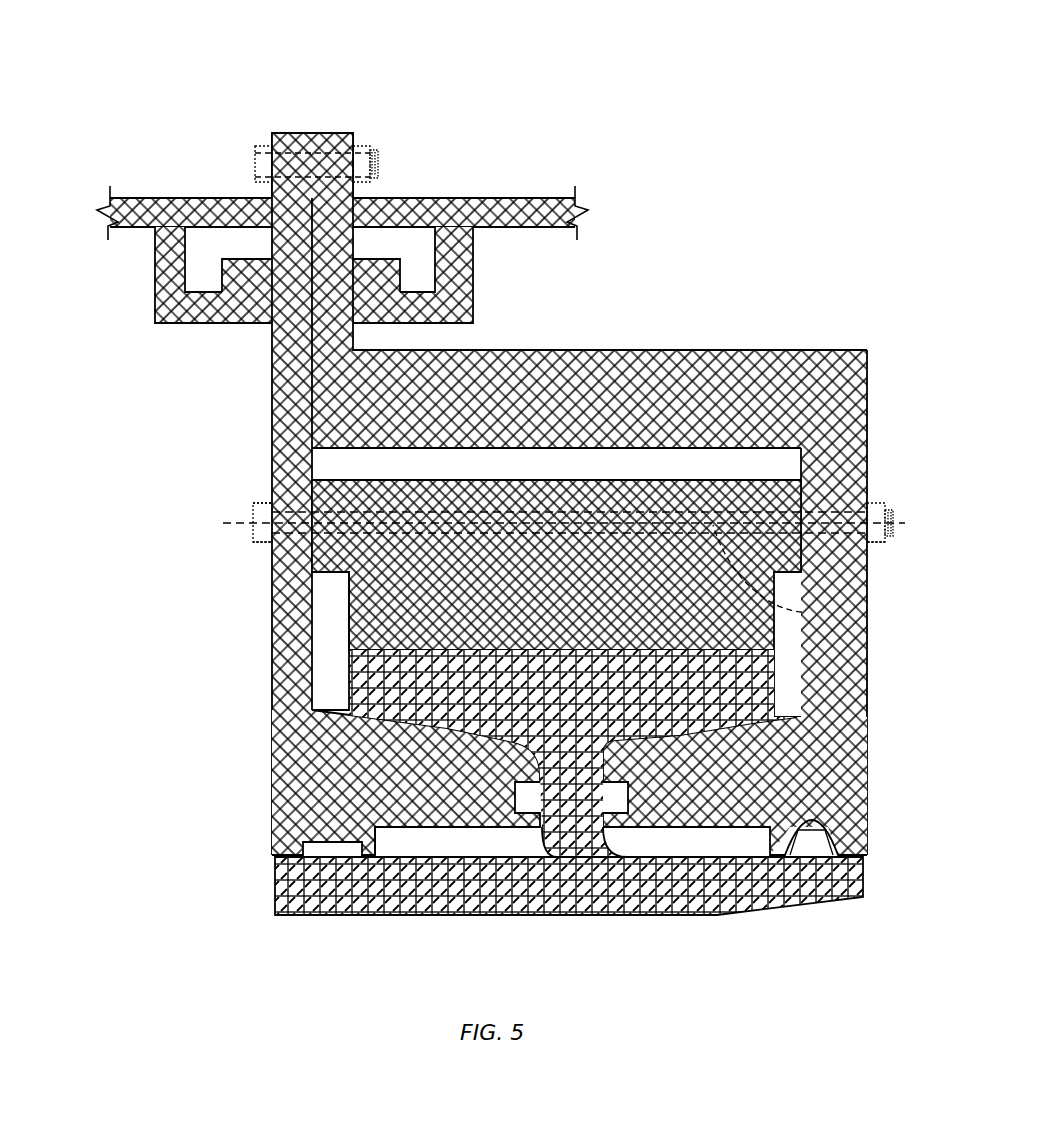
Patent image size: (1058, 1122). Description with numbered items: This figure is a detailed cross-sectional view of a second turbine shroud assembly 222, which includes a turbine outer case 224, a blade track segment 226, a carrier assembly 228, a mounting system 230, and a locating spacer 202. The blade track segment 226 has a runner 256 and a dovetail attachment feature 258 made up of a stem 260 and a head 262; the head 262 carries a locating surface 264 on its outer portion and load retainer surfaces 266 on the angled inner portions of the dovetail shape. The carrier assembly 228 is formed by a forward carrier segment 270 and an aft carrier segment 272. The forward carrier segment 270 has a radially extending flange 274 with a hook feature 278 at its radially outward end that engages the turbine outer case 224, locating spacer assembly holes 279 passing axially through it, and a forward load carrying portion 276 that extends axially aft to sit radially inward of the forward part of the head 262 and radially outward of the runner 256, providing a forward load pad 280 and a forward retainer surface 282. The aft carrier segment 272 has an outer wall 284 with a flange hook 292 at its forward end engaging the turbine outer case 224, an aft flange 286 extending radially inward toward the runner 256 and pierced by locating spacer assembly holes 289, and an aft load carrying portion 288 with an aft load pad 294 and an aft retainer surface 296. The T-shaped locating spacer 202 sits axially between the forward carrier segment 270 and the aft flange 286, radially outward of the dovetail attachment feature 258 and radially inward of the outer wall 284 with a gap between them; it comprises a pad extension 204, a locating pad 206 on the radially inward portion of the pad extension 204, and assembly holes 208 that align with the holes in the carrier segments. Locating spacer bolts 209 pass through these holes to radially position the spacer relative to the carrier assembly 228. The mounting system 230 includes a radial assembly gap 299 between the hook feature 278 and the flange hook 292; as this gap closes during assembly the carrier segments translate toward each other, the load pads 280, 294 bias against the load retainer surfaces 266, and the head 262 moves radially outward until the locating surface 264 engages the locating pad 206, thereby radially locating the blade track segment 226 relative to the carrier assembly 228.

The locating spacer 202 is at (750, 507).
The pad extension 204 is at (722, 617).
The locating pad 206 is at (747, 650).
The assembly holes 208 is at (802, 612).
The locating spacer bolts 209 is at (880, 545).
The turbine shroud assembly 222 is at (708, 123).
The turbine outer case 224 is at (224, 152).
The blade track segment 226 is at (730, 922).
The carrier assembly 228 is at (664, 300).
The mounting system 230 is at (100, 190).
The runner 256 is at (770, 890).
The dovetail attachment feature 258 is at (582, 835).
The stem 260 is at (545, 832).
The head 262 is at (710, 690).
The locating surface 264 is at (703, 690).
The load retainer surfaces 266 is at (705, 733).
The forward carrier segment 270 is at (218, 613).
The aft carrier segment 272 is at (804, 300).
The radially extending flange 274 is at (272, 468).
The forward load carrying portion 276 is at (350, 770).
The hook feature 278 is at (247, 283).
The locating spacer assembly holes 279 is at (268, 527).
The forward load pad 280 is at (447, 730).
The forward retainer surface 282 is at (327, 710).
The outer wall 284 is at (471, 365).
The aft flange 286 is at (837, 437).
The aft load carrying portion 288 is at (770, 762).
The locating spacer assembly holes 289 is at (877, 497).
The flange hook 292 is at (383, 282).
The aft load pad 294 is at (675, 750).
The aft retainer surface 296 is at (690, 735).
The radial assembly gap 299 is at (308, 428).